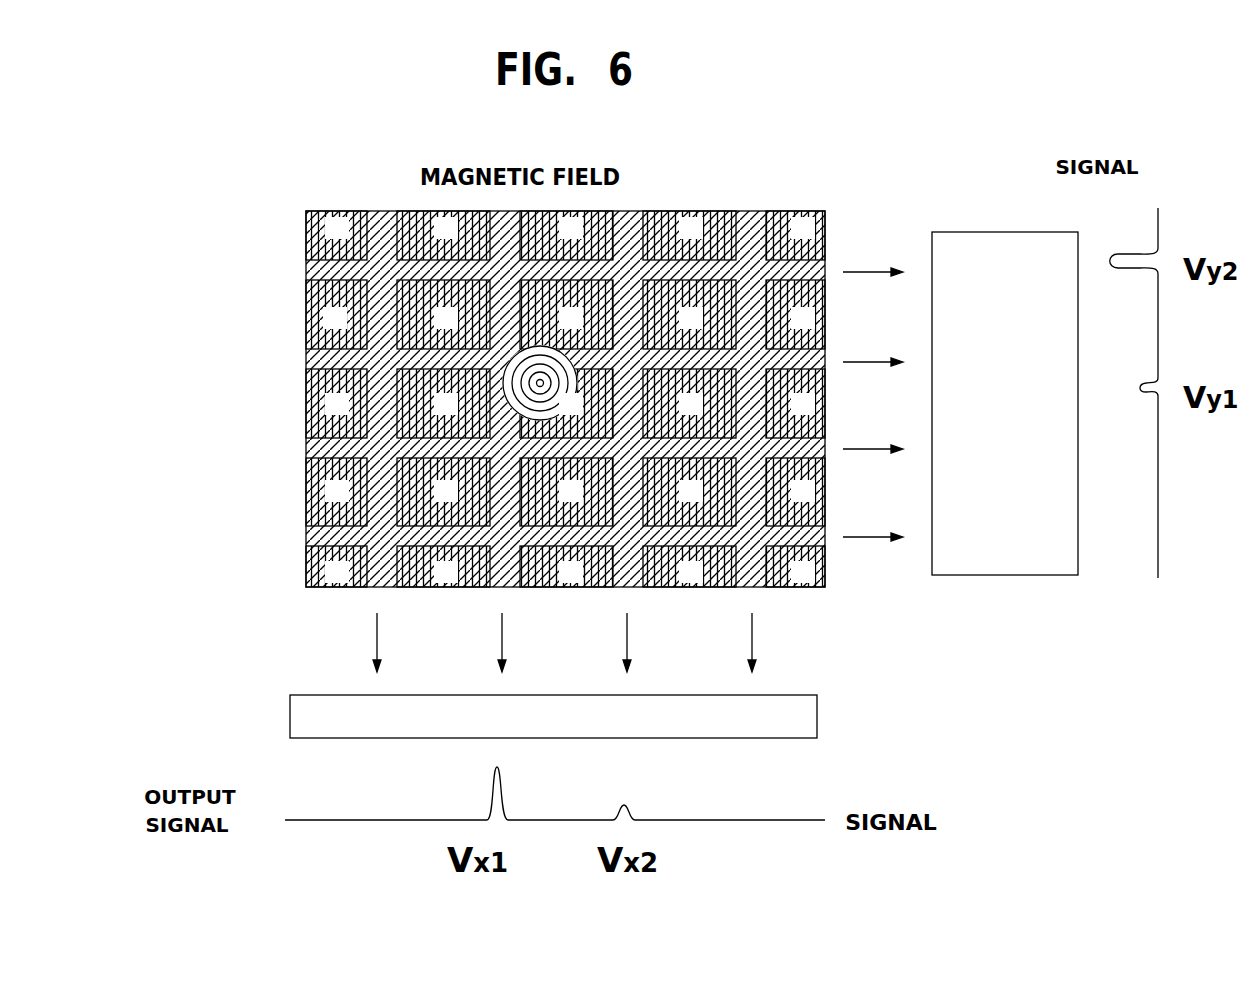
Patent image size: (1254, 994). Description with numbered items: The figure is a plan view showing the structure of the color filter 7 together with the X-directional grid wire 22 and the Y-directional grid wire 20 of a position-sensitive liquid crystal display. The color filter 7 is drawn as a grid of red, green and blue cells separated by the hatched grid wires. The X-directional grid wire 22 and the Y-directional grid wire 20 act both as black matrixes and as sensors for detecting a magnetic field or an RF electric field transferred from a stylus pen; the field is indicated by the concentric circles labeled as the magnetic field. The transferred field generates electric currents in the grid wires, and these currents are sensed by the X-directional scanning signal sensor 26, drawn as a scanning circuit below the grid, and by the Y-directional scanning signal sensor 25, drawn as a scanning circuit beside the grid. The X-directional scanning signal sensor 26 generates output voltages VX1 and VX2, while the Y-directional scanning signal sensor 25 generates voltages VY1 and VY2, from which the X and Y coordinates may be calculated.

The color filter 7 is at (322, 322).
The Y-directional grid wire 20 is at (633, 212).
The X-directional grid wire 22 is at (306, 446).
The Y-directional scanning signal sensor 25 is at (963, 232).
The X-directional scanning signal sensor 26 is at (810, 717).